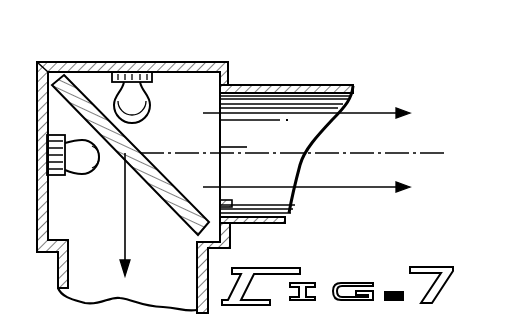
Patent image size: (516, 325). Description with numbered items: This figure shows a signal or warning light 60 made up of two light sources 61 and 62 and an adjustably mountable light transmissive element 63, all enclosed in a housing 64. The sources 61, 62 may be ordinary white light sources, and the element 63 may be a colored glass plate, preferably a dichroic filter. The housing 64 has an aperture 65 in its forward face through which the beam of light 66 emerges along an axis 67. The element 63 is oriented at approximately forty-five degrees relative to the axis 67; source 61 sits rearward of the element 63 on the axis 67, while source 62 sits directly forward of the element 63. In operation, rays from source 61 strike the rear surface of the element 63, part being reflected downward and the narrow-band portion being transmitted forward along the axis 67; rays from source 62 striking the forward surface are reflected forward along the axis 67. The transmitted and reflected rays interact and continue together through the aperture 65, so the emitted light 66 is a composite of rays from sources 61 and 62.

The signal or warning light 60 is at (271, 60).
The light source 61 is at (97, 172).
The light source 62 is at (147, 98).
The light transmissive element 63 is at (157, 176).
The housing 64 is at (186, 62).
The aperture 65 is at (232, 224).
The beam of light 66 is at (354, 114).
The axis 67 is at (352, 151).